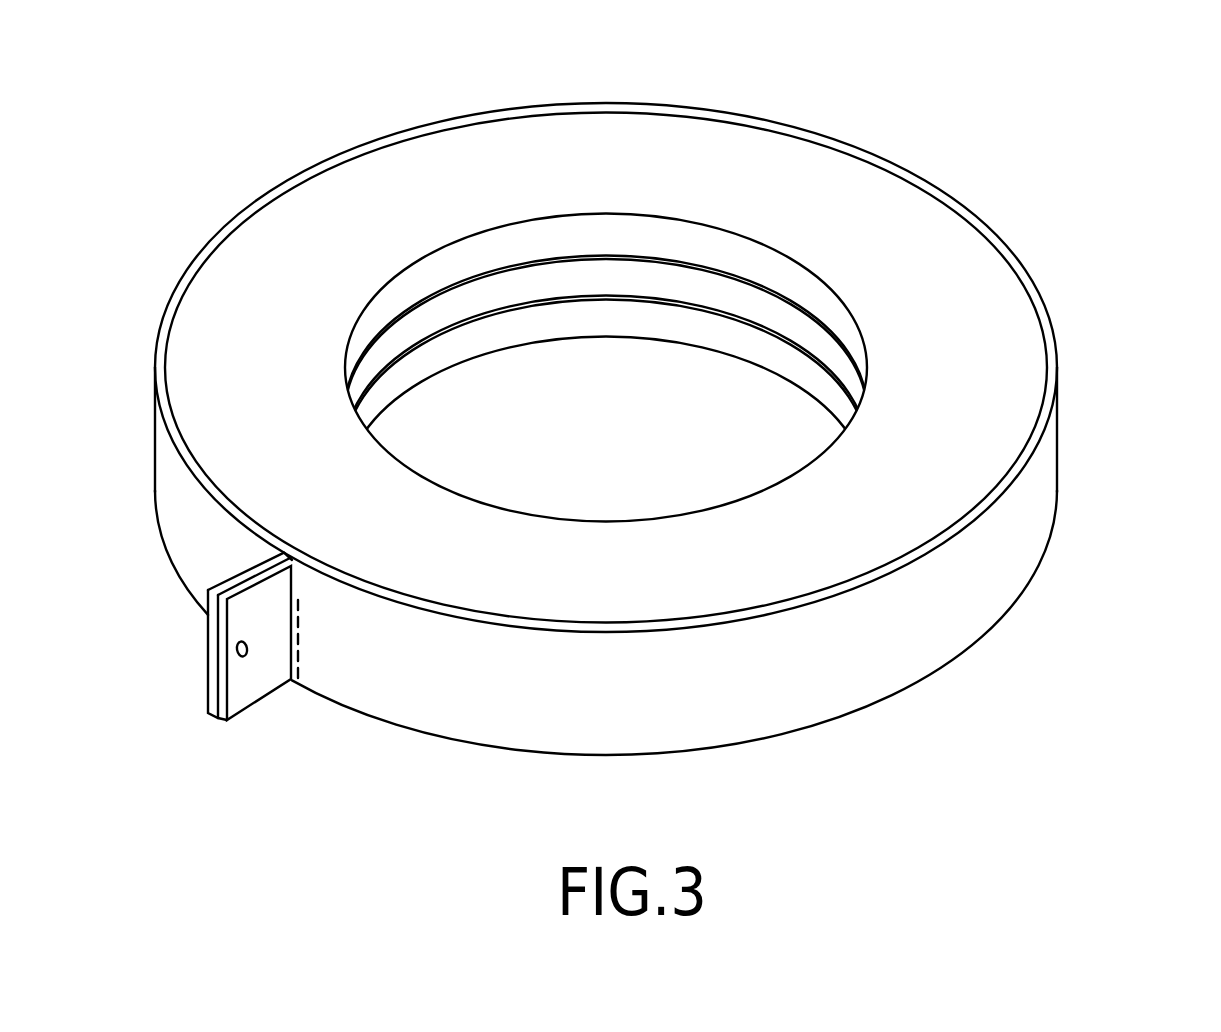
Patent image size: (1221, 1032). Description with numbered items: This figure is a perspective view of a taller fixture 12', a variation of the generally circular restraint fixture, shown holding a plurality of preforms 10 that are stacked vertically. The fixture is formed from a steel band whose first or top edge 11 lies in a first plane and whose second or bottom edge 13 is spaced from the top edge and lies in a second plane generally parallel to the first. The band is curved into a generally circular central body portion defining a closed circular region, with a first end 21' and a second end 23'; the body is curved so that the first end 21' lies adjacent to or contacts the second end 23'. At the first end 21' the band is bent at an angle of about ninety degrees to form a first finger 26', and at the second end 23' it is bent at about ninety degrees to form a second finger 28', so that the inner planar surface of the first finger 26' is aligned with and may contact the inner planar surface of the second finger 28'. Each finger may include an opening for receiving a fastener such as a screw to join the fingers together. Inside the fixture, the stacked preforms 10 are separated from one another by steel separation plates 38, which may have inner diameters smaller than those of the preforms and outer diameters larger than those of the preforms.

The preform 10 is at (1005, 390).
The first or top edge 11 is at (865, 152).
The taller fixture 12' is at (682, 430).
The second or bottom edge 13 is at (817, 725).
The first end 21' is at (277, 506).
The second end 23' is at (326, 578).
The first finger 26' is at (195, 636).
The second finger 28' is at (290, 687).
The separation plates 38 is at (655, 298).